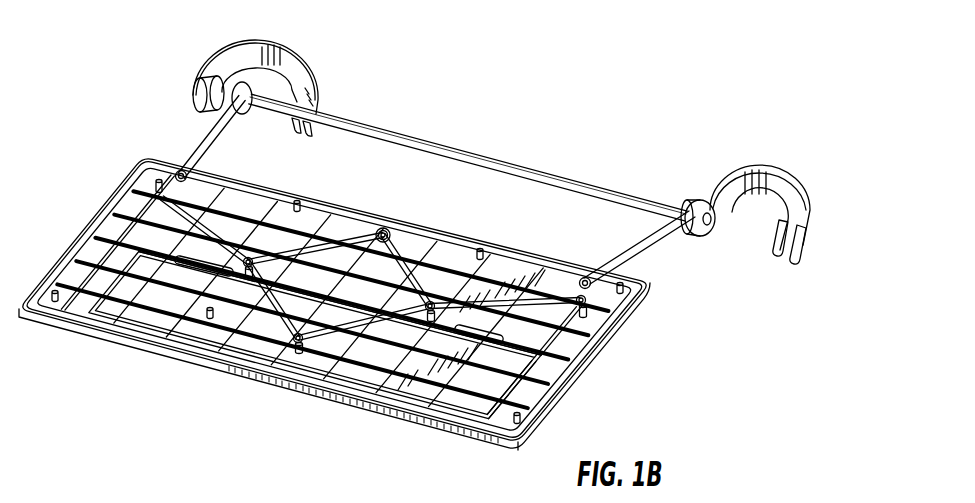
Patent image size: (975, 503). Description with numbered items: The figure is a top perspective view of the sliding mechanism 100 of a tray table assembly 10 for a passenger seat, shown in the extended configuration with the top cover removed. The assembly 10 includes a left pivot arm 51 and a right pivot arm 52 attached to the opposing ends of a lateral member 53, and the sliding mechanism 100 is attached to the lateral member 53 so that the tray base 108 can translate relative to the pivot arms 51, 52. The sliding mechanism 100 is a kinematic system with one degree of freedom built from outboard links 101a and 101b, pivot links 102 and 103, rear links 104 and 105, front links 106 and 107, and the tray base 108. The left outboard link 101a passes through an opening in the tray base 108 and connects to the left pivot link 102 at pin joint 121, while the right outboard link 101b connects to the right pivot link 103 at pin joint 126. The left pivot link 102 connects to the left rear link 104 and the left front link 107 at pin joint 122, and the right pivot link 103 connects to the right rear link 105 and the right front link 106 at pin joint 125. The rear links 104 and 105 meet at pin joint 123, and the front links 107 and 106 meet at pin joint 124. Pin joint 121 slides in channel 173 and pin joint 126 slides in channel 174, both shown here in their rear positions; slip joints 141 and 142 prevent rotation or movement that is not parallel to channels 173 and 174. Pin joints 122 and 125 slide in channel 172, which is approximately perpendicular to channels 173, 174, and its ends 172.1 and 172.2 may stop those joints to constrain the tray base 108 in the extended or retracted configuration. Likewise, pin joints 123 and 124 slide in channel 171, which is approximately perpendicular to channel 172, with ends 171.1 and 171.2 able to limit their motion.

The tray table assembly 10 is at (560, 86).
The left pivot arm 51 is at (242, 60).
The right pivot arm 52 is at (740, 186).
The lateral member 53 is at (488, 160).
The sliding mechanism 100 is at (354, 157).
The left outboard link 101a is at (208, 133).
The right outboard link 101b is at (636, 232).
The left pivot link 102 is at (190, 226).
The right pivot link 103 is at (558, 298).
The left rear link 104 is at (310, 243).
The right rear link 105 is at (392, 245).
The right front link 106 is at (424, 326).
The left front link 107 is at (240, 356).
The tray base 108 is at (479, 396).
The pin joint 121 is at (155, 198).
The pin joint 122 is at (222, 287).
The pin joint 123 is at (381, 229).
The pin joint 124 is at (290, 350).
The pin joint 125 is at (500, 295).
The pin joint 126 is at (596, 305).
The slip joint 141 is at (258, 156).
The slip joint 142 is at (600, 276).
The channel 171 is at (367, 335).
The end 171.1 is at (391, 226).
The end 171.2 is at (296, 358).
The channel 172 is at (282, 250).
The end 172.1 is at (178, 262).
The end 172.2 is at (577, 378).
The channel 173 is at (105, 268).
The channel 174 is at (555, 338).